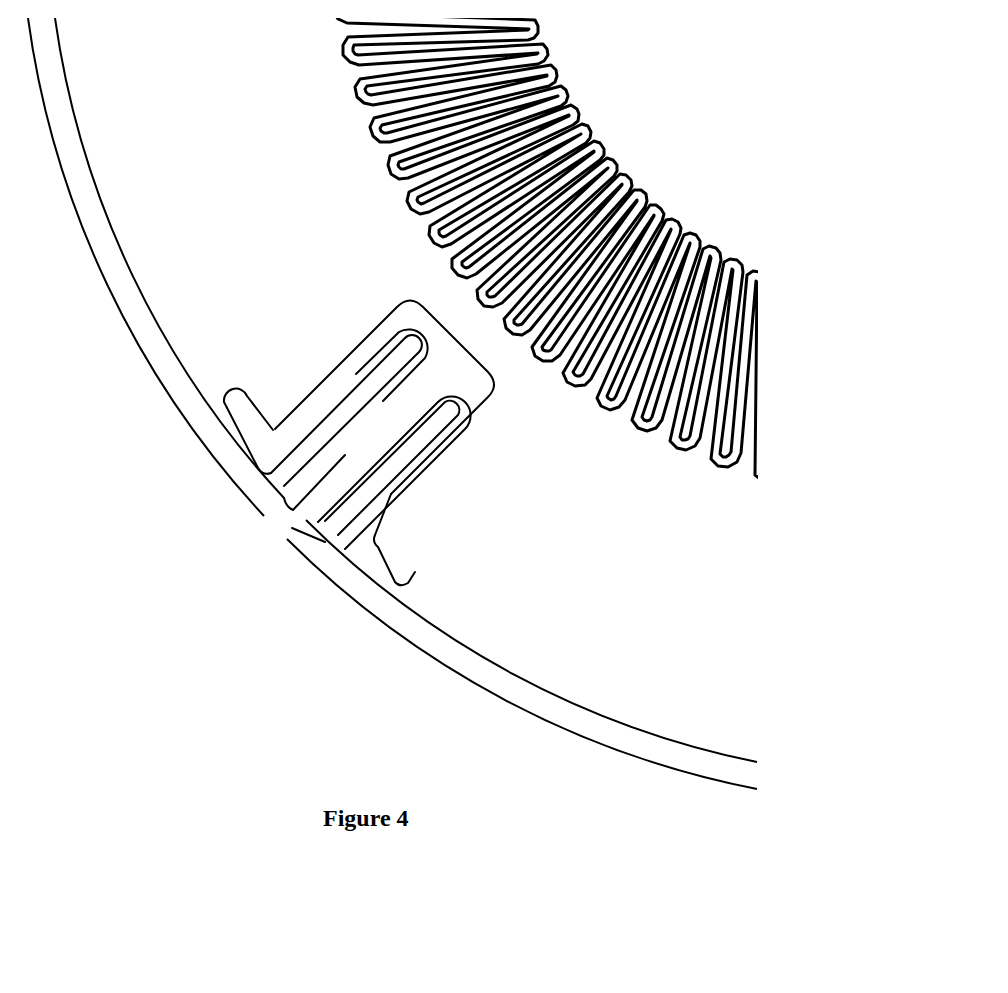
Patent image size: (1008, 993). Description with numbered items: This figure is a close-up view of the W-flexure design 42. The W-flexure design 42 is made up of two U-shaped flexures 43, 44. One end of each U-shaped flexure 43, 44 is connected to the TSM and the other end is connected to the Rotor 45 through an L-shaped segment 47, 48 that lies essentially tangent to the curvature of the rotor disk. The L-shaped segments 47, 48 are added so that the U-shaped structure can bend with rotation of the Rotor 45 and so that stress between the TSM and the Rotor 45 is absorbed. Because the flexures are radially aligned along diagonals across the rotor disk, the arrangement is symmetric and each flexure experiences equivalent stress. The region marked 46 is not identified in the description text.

The W-flexure design 42 is at (432, 533).
The U-shaped flexure 43 is at (352, 380).
The U-shaped flexure 44 is at (442, 435).
The Rotor 45 is at (467, 654).
The electrode region 46 is at (156, 267).
The L-shaped segment 47 is at (243, 456).
The L-shaped segment 48 is at (345, 565).